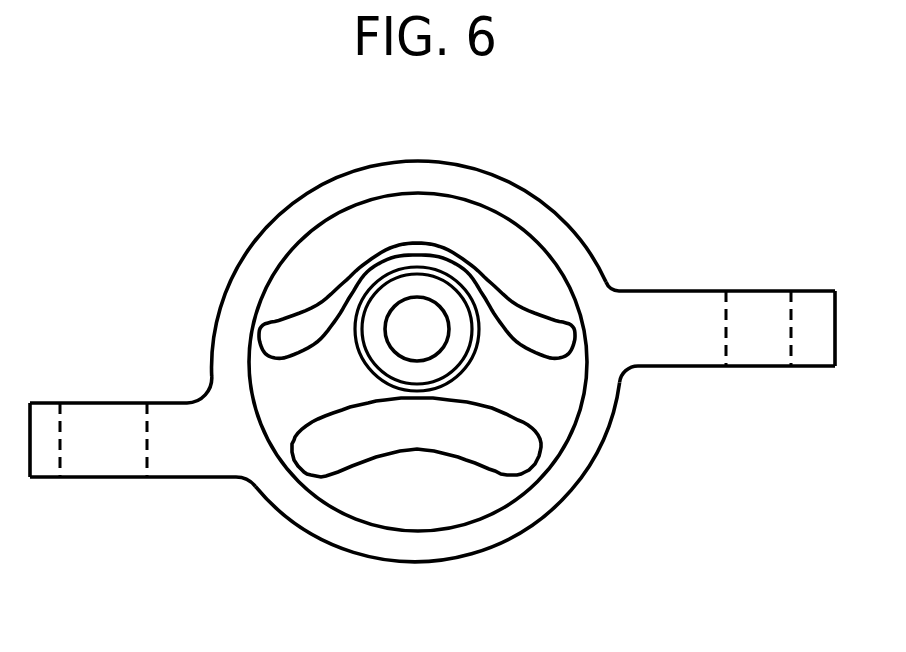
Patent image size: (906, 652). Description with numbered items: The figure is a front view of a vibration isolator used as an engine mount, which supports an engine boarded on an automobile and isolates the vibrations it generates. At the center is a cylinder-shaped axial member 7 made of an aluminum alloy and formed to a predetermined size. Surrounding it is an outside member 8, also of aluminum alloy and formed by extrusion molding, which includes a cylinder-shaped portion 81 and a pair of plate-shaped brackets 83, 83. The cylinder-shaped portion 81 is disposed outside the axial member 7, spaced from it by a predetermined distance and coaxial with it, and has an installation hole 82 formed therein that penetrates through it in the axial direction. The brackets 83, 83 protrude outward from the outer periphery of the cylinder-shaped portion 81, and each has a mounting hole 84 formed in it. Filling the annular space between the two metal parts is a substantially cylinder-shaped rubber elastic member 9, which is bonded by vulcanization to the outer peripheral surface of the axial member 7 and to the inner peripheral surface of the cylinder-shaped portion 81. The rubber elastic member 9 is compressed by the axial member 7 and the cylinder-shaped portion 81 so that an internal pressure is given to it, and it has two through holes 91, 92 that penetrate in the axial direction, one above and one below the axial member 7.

The axial member 7 is at (460, 338).
The outside member 8 is at (432, 322).
The cylinder-shaped portion 81 is at (325, 193).
The installation hole 82 is at (443, 201).
The bracket 83 is at (178, 418).
The mounting hole 84 is at (143, 450).
The rubber elastic member 9 is at (426, 391).
The through hole 91 is at (293, 333).
The through hole 92 is at (467, 442).